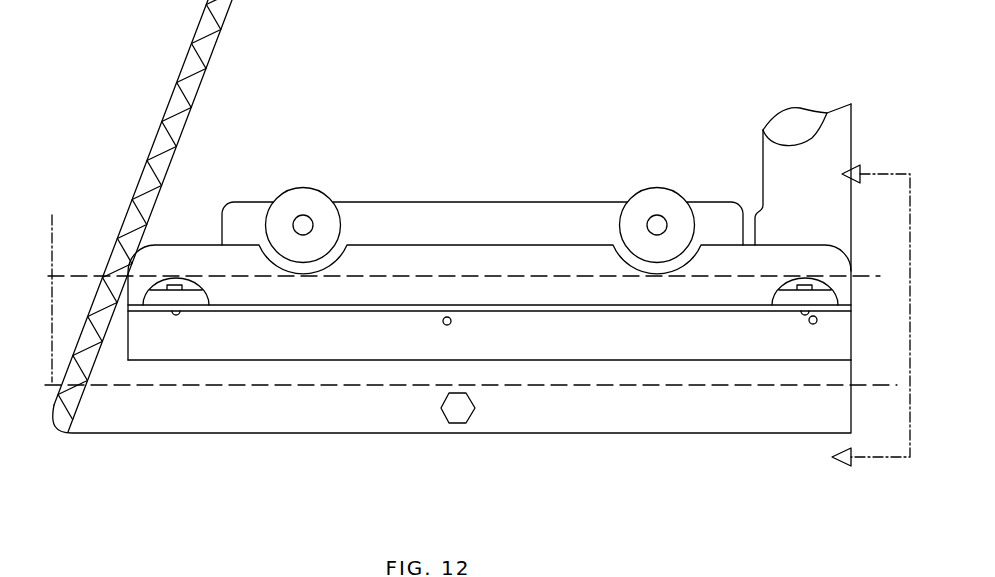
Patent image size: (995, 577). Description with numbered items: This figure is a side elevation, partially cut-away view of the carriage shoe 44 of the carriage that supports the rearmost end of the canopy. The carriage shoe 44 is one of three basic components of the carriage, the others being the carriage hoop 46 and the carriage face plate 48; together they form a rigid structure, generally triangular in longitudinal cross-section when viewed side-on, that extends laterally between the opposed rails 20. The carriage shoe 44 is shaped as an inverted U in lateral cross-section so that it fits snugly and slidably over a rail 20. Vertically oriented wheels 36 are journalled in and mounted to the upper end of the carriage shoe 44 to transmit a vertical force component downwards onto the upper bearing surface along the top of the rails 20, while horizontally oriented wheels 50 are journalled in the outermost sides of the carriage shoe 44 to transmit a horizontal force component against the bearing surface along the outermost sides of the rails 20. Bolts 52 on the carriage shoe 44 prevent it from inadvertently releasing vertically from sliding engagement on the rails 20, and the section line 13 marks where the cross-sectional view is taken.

The section line 13- 13 is at (854, 317).
The rails 20 is at (78, 276).
The vertically oriented wheels 36 is at (326, 200).
The carriage shoe 44 is at (200, 437).
The carriage hoop 46 is at (775, 157).
The carriage face plate 48 is at (205, 42).
The horizontally oriented wheels 50 is at (200, 294).
The bolts 52 is at (465, 418).